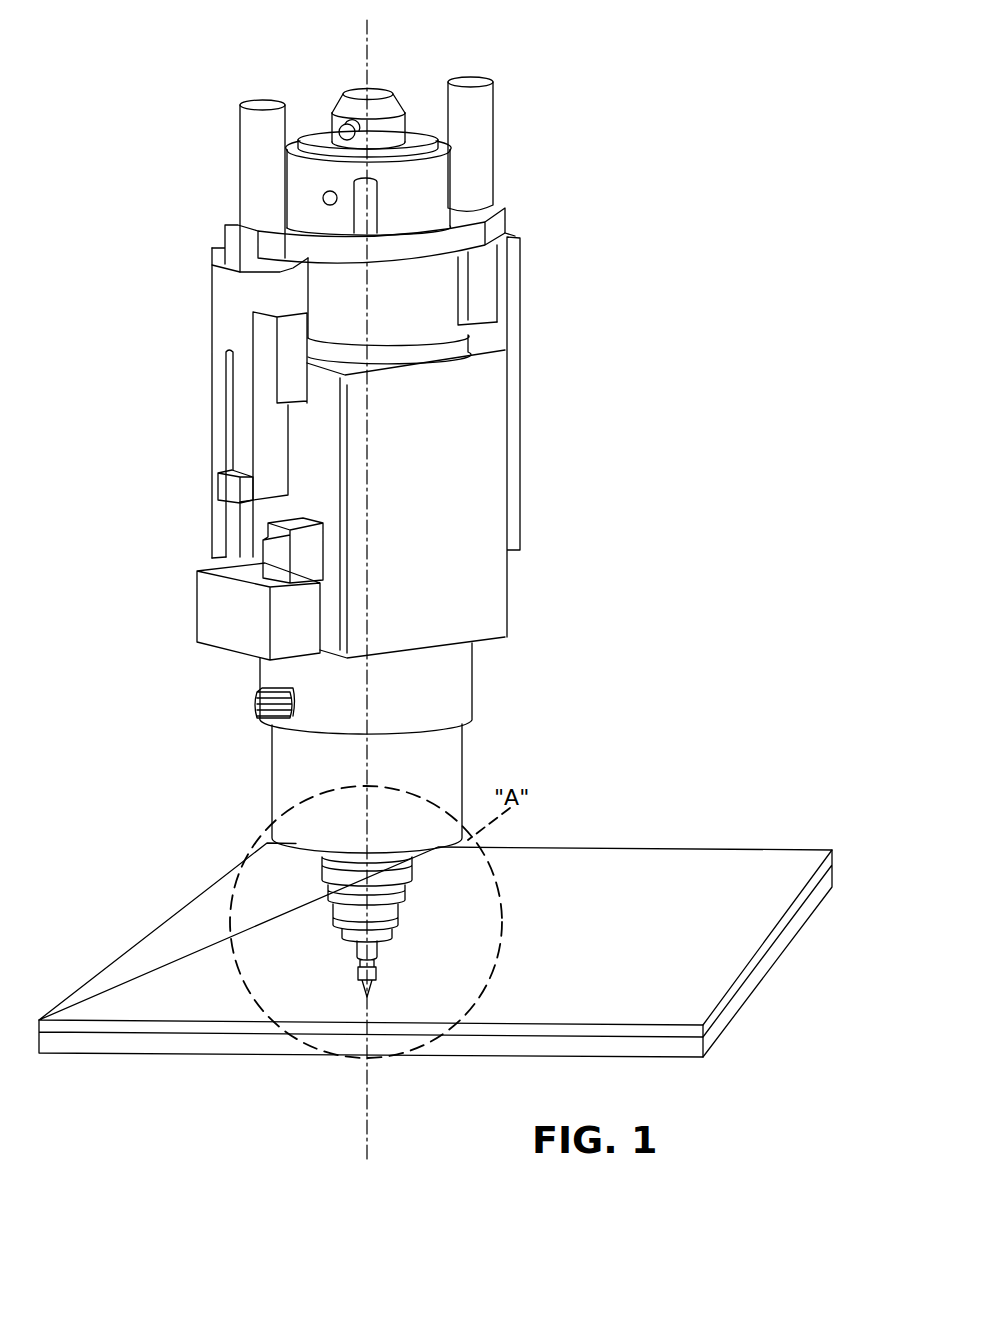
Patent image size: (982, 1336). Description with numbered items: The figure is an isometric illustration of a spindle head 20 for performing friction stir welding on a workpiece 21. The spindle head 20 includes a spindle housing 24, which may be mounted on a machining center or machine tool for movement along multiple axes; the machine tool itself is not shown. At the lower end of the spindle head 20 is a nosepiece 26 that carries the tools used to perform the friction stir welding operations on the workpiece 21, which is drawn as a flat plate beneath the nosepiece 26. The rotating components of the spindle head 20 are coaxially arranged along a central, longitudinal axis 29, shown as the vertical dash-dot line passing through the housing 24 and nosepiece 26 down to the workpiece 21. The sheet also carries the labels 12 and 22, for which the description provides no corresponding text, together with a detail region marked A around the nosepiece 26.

The section line of FIG. 12 is at (104, 166).
The spindle head 20 is at (396, 507).
The workpiece 21 is at (680, 883).
The top cap / fitting 22 is at (381, 105).
The spindle housing 24 is at (445, 523).
The nosepiece 26 is at (310, 920).
The central longitudinal axis 29 is at (352, 1077).